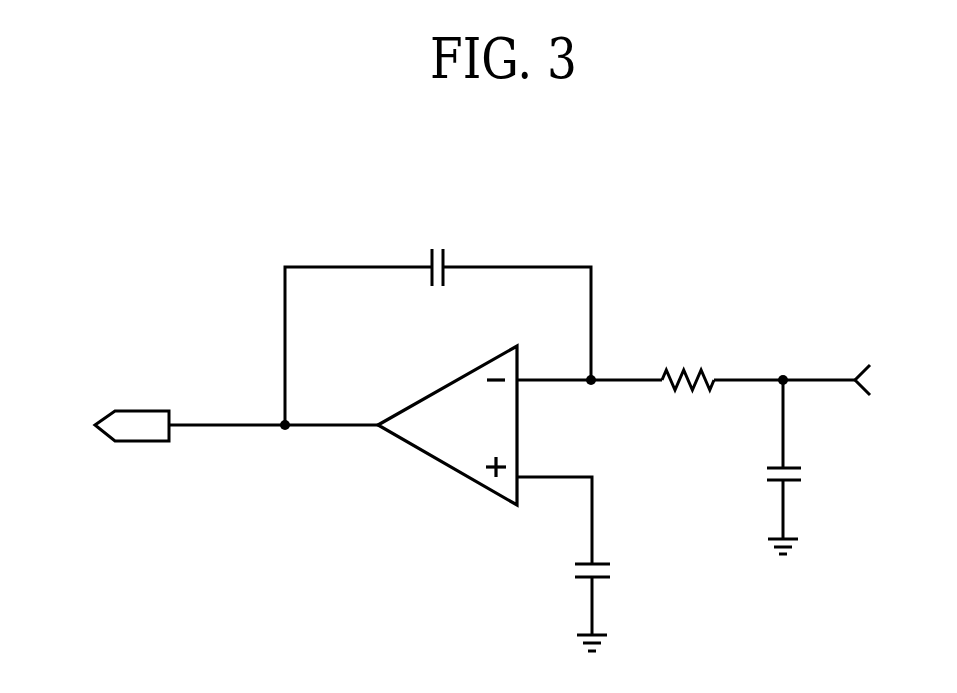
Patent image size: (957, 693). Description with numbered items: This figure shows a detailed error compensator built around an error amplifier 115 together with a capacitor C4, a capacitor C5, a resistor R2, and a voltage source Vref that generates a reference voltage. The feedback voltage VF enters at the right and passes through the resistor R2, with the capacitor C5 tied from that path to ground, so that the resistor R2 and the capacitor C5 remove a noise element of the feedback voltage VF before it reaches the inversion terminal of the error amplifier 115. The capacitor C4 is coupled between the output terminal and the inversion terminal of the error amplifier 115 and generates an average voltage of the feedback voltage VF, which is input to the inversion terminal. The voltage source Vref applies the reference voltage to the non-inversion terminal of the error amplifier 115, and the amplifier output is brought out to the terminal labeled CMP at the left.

The error amplifier 115 is at (450, 467).
The capacitor C4 is at (438, 316).
The resistor R2 is at (650, 359).
The capacitor C5 is at (802, 467).
The voltage source Vref is at (592, 564).
The comparator output terminal CMP is at (205, 426).
The feedback voltage VF is at (843, 380).